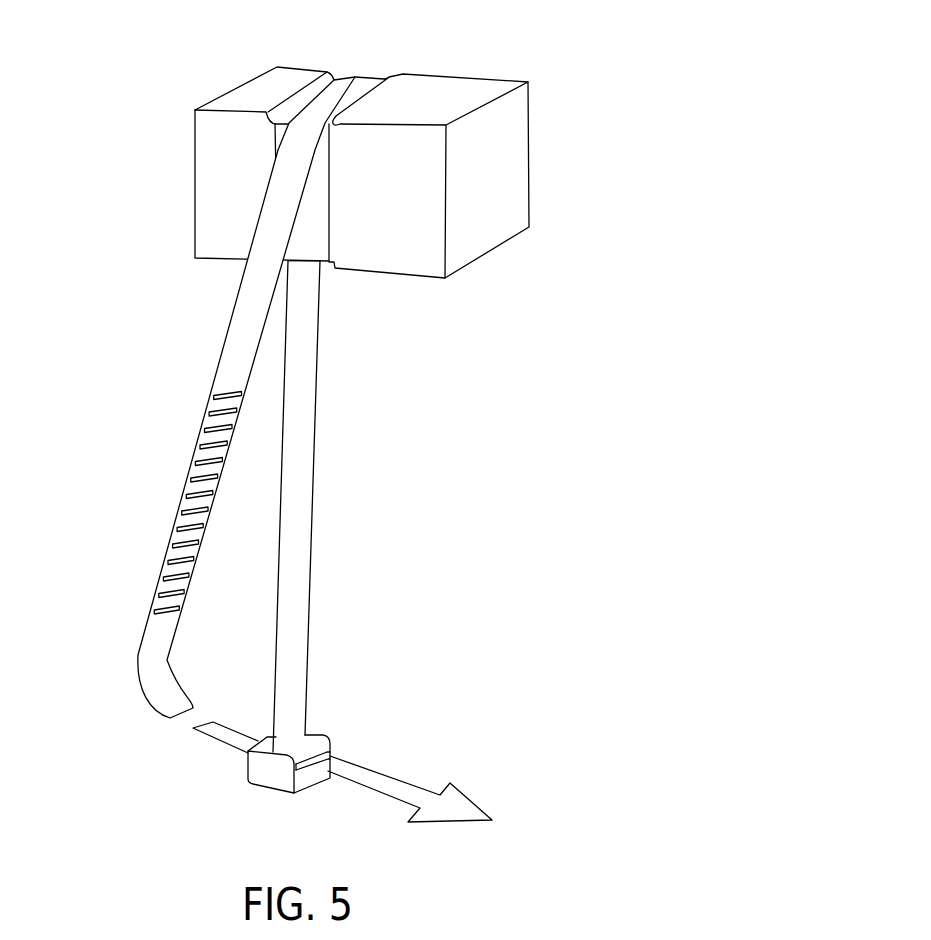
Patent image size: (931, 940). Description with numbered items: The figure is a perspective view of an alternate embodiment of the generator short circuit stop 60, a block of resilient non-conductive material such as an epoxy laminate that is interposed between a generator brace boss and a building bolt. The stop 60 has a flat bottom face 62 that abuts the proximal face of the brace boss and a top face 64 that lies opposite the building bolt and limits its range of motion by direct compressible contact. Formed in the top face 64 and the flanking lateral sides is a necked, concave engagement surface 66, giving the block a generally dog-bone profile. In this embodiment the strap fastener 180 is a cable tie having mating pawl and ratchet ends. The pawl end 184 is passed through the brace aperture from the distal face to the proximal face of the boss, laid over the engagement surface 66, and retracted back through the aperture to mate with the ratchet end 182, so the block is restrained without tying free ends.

The short circuit stop 60 is at (163, 182).
The bottom face 62 is at (464, 186).
The top face 64 is at (478, 75).
The engagement surface 66 is at (302, 245).
The strap fastener 180 is at (326, 527).
The ratchet end 182 is at (344, 754).
The pawl end 184 is at (153, 680).